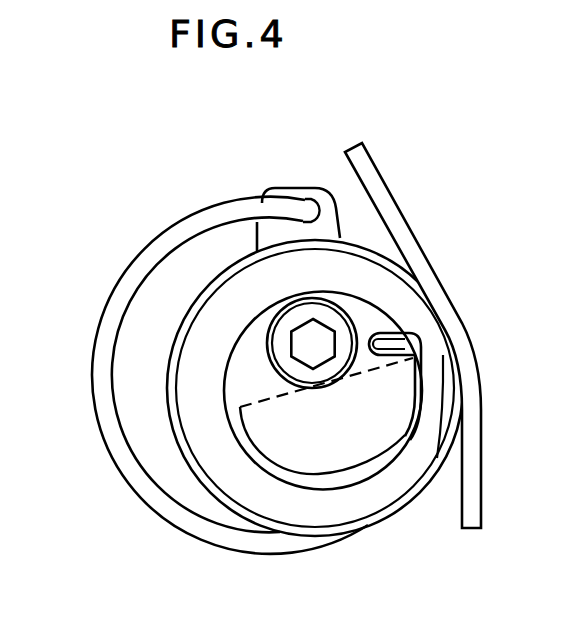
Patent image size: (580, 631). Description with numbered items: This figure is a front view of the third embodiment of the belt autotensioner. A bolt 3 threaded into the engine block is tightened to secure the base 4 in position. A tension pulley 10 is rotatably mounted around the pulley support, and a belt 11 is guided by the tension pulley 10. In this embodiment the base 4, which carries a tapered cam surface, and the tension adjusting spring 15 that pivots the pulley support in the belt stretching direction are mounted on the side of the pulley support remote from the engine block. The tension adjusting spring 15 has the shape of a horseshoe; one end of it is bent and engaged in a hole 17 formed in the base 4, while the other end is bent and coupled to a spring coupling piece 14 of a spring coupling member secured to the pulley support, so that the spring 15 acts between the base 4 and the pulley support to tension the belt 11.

The bolt 3 is at (337, 331).
The base 4 is at (378, 415).
The tension pulley 10 is at (168, 340).
The belt 11 is at (372, 168).
The spring coupling portion 14 is at (307, 197).
The tension adjusting spring 15 is at (112, 439).
The hole 17 is at (400, 333).